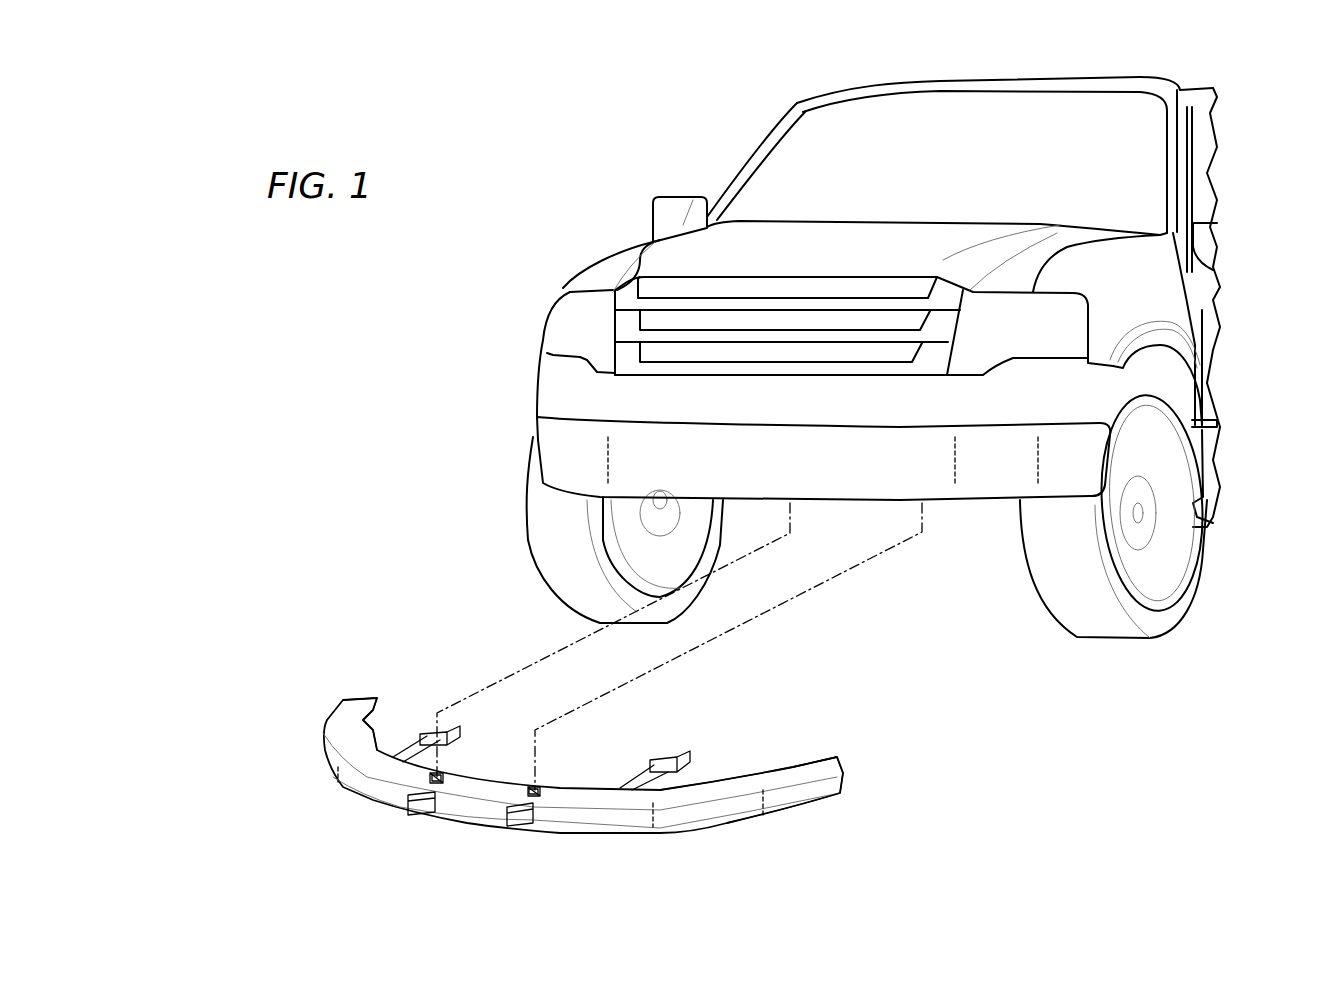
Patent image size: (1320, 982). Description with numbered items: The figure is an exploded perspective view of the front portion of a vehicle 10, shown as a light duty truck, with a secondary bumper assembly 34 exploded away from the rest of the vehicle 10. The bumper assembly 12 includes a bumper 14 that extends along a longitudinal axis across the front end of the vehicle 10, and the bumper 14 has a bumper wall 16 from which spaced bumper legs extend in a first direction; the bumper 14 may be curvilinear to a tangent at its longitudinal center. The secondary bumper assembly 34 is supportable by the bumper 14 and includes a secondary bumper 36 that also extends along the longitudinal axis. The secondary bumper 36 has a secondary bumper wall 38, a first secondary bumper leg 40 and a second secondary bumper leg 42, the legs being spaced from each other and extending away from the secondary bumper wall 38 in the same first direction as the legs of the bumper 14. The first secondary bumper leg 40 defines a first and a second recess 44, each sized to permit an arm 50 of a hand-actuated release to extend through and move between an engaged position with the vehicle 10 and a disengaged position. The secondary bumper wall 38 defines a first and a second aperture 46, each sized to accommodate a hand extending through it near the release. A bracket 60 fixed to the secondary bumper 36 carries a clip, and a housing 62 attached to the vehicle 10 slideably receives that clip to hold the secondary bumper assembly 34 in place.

The vehicle 10 is at (580, 134).
The bumper assembly 12 is at (357, 543).
The bumper 14 is at (530, 425).
The bumper wall 16 is at (933, 457).
The secondary bumper assembly 34 is at (866, 763).
The secondary bumper 36 is at (316, 741).
The secondary bumper wall 38 is at (827, 782).
The first secondary bumper leg 40 is at (793, 770).
The second secondary bumper leg 42 is at (373, 730).
The recess 44 is at (519, 789).
The aperture 46 is at (513, 823).
The arm 50 is at (433, 780).
The bracket 60 is at (400, 757).
The housing 62 is at (460, 730).